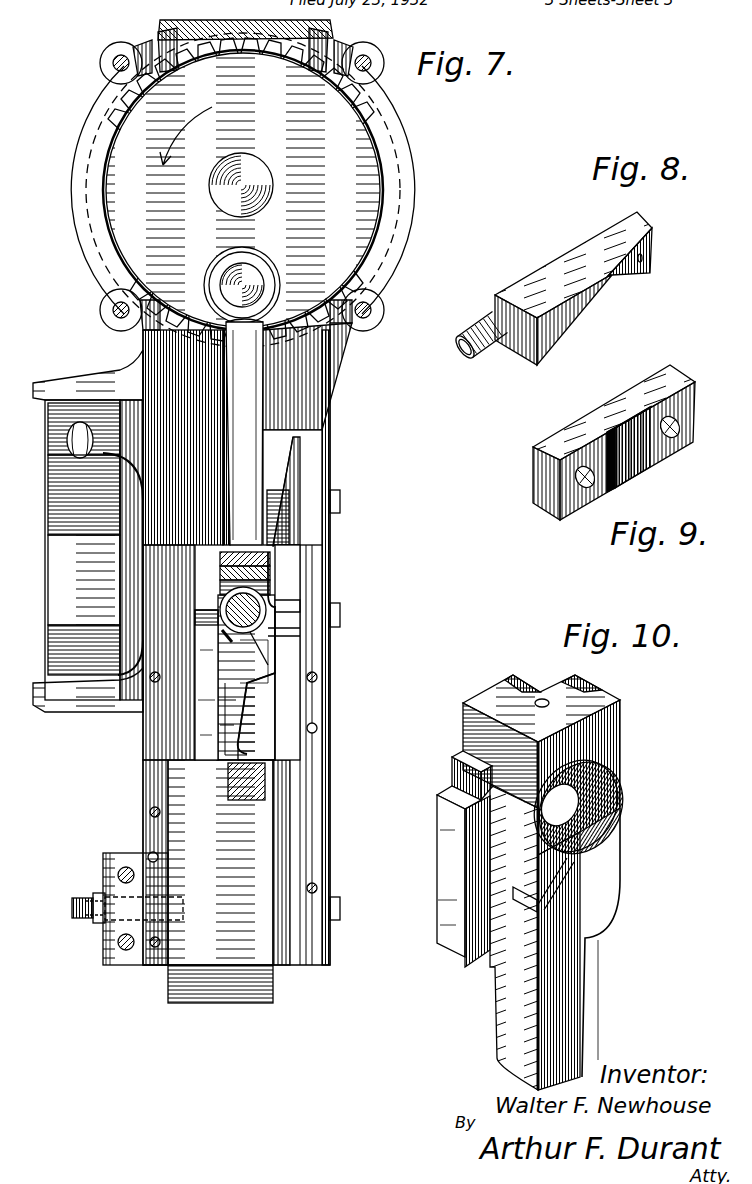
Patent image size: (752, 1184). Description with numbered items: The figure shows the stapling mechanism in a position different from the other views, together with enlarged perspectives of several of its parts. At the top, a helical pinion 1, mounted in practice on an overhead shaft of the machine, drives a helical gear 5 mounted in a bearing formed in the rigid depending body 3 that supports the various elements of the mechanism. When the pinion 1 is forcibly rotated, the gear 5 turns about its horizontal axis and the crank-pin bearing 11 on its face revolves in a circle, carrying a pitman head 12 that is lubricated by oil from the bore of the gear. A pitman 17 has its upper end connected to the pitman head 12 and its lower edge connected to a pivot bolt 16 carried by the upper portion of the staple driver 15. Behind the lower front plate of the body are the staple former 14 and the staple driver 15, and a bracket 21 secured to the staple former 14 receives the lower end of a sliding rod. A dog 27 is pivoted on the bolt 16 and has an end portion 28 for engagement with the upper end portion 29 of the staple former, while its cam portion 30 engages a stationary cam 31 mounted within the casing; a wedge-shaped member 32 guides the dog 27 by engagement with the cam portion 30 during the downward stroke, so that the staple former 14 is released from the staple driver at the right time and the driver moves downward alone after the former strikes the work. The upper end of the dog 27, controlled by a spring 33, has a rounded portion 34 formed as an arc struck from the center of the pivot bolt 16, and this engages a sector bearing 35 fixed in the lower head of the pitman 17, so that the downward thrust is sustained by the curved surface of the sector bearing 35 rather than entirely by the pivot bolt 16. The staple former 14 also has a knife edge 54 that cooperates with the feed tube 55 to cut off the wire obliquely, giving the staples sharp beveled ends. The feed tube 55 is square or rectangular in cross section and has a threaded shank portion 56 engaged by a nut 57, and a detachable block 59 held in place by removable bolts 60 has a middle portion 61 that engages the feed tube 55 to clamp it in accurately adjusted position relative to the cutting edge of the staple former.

In FIG. 7, the helical pinion 1 is at (268, 22).
In FIG. 7, the depending body 3 is at (138, 377).
In FIG. 7, the helical gear 5 is at (243, 190).
In FIG. 7, the crank-pin bearing 11 is at (230, 275).
In FIG. 7, the pitman head 12 is at (276, 282).
In FIG. 7, the staple former 14 is at (250, 830).
In FIG. 7, the staple driver 15 is at (205, 703).
In FIG. 10, the staple driver 15 is at (445, 903).
In FIG. 7, the pivot bolt 16 is at (282, 630).
In FIG. 7, the pitman 17 is at (250, 395).
In FIG. 7, the bracket 21 is at (268, 773).
In FIG. 7, the dog 27 is at (252, 654).
In FIG. 10, the dog 27 is at (602, 865).
In FIG. 7, the end portion 28 is at (232, 718).
In FIG. 10, the end portion 28 is at (570, 1043).
In FIG. 7, the upper end portion 29 is at (258, 707).
In FIG. 7, the cam portion 30 is at (285, 681).
In FIG. 10, the cam portion 30 is at (607, 930).
In FIG. 7, the stationary cam 31 is at (282, 586).
In FIG. 7, the wedge-shaped member 32 is at (290, 485).
In FIG. 7, the spring 33 is at (262, 622).
In FIG. 7, the rounded portion 34 is at (286, 606).
In FIG. 10, the rounded portion 34 is at (562, 768).
In FIG. 7, the sector bearing 35 is at (275, 558).
In FIG. 10, the sector bearing 35 is at (597, 698).
In FIG. 7, the knife edge 54 is at (192, 997).
In FIG. 7, the feed tube 55 is at (127, 912).
In FIG. 8, the feed tube 55 is at (592, 325).
In FIG. 7, the threaded shank portion 56 is at (82, 915).
In FIG. 8, the threaded shank portion 56 is at (503, 350).
In FIG. 7, the nut 57 is at (100, 895).
In FIG. 9, the detachable block 59 is at (543, 477).
In FIG. 7, the removable bolts 60 is at (125, 868).
In FIG. 9, the middle portion 61 is at (633, 460).